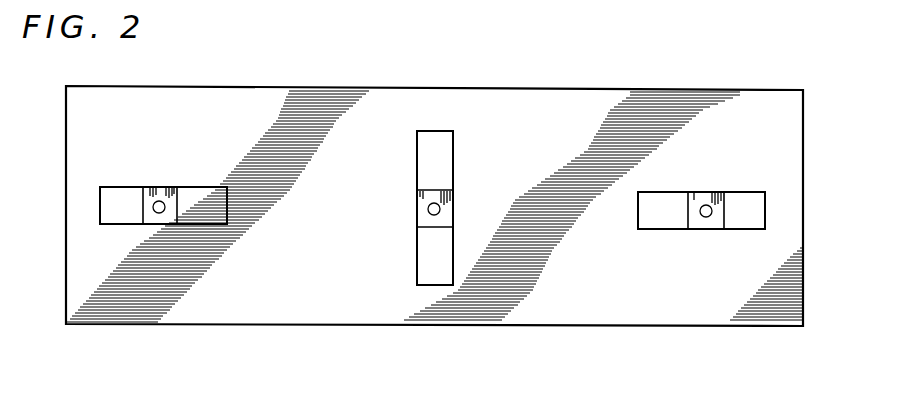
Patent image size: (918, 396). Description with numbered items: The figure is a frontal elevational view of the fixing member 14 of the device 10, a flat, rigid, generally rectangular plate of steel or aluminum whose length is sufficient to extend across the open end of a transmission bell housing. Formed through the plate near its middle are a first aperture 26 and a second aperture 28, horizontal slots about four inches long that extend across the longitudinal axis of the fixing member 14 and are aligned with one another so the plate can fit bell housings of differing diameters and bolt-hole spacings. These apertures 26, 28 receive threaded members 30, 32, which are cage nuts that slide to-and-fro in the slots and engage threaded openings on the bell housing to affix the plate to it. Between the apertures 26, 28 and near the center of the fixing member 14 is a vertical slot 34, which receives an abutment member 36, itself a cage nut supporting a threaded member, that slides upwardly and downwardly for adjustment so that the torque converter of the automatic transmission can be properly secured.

The device 10 is at (747, 43).
The fixing member 14 is at (555, 93).
The first aperture 26 is at (100, 187).
The second aperture 28 is at (758, 192).
The threaded member 30 is at (143, 207).
The threaded member 32 is at (724, 216).
The vertical slot 34 is at (417, 131).
The abutment member 36 is at (432, 228).